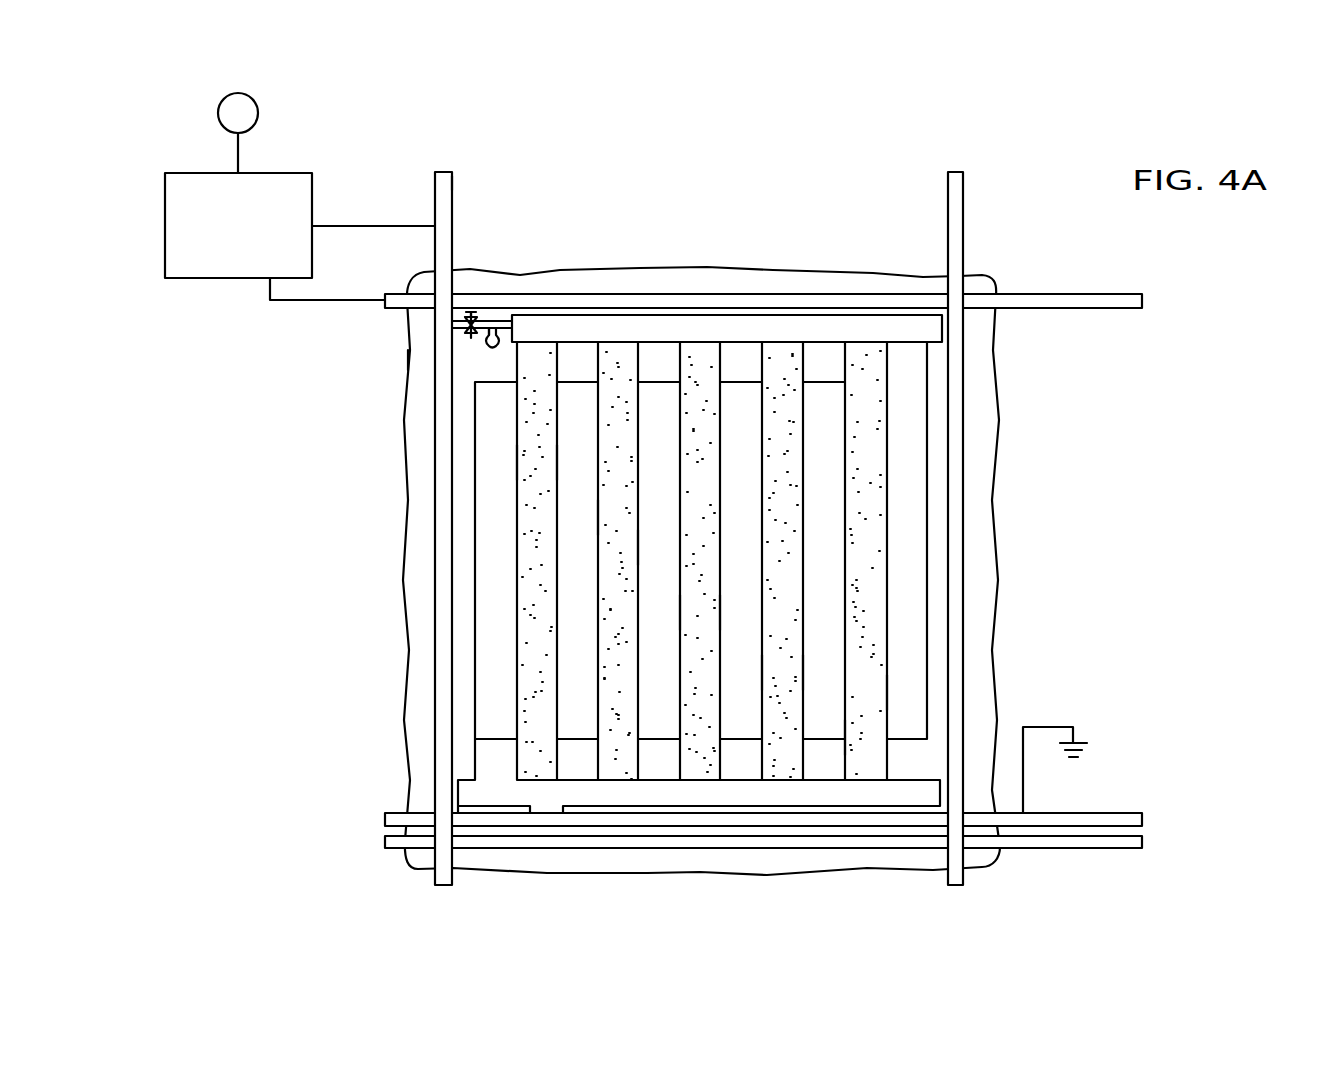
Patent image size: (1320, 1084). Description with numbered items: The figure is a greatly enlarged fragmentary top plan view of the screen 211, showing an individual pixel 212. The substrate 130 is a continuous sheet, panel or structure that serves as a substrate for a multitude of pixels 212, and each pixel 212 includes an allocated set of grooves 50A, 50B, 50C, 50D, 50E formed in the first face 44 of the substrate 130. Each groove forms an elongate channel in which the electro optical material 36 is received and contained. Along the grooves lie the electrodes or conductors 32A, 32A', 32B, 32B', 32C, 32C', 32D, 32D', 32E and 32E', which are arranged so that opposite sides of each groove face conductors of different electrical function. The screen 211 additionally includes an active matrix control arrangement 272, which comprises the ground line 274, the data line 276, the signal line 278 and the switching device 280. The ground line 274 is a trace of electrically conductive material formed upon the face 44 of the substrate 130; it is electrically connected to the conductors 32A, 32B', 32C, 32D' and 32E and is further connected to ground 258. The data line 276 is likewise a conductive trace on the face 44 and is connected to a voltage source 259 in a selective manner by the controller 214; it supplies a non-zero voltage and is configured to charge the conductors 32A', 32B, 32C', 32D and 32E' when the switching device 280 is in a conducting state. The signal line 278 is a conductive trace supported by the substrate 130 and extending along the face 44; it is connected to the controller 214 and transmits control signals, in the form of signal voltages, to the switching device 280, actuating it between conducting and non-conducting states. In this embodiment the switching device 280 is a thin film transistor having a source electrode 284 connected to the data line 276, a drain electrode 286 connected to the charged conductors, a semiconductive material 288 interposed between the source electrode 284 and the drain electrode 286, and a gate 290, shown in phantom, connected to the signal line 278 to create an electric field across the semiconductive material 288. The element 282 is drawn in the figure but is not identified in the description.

The controller 214 is at (207, 172).
The voltage source 259 is at (253, 99).
The active matrix control arrangement 272 is at (431, 168).
The data line 276 is at (450, 177).
The gate 290 is at (473, 312).
The source electrode 284 is at (458, 305).
The drain electrode 286 is at (487, 318).
The first face 44 is at (611, 328).
The substrate 130 is at (822, 358).
The signal line 278 is at (858, 300).
The screen 211 is at (993, 231).
The pixel 212 is at (317, 355).
The switching device 280 is at (460, 340).
The semiconductive material 288 is at (477, 343).
The nozzle 282 is at (492, 348).
The groove 50A is at (530, 545).
The groove 50B is at (610, 585).
The groove 50C is at (715, 386).
The groove 50D is at (793, 517).
The groove 50E is at (870, 555).
The conductor 32A is at (497, 441).
The conductor 32A' is at (577, 441).
The conductor 32B is at (579, 496).
The conductor 32B' is at (658, 526).
The conductor 32C is at (660, 596).
The conductor 32C' is at (740, 596).
The conductor 32D is at (742, 655).
The conductor 32D' is at (823, 655).
The conductor 32E is at (825, 720).
The conductor 32E' is at (905, 676).
The ground 258 is at (1078, 745).
The ground line 274 is at (1075, 813).
The electro optical material 36 is at (787, 772).